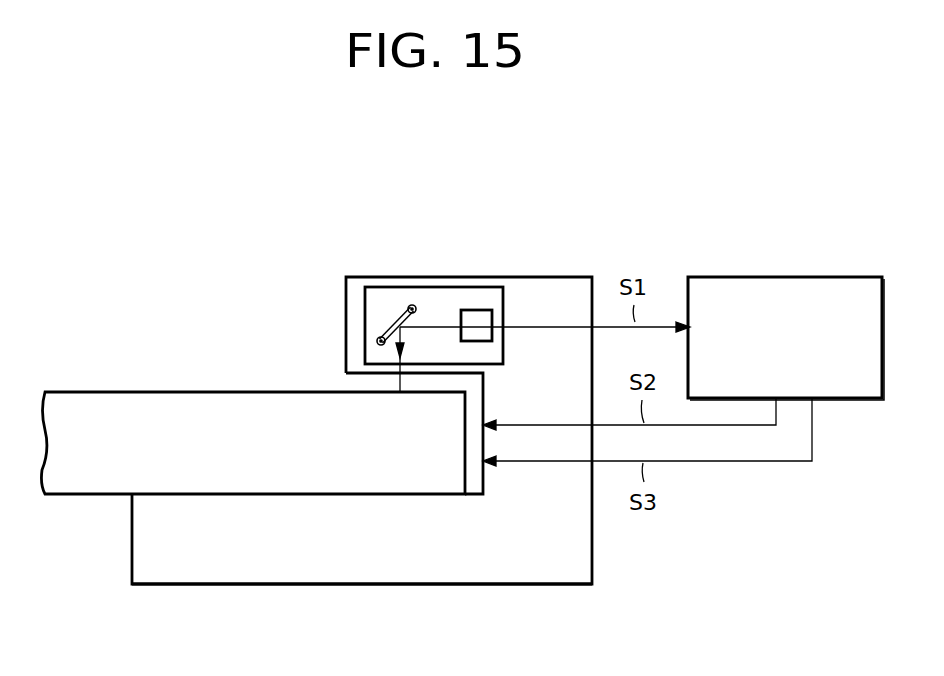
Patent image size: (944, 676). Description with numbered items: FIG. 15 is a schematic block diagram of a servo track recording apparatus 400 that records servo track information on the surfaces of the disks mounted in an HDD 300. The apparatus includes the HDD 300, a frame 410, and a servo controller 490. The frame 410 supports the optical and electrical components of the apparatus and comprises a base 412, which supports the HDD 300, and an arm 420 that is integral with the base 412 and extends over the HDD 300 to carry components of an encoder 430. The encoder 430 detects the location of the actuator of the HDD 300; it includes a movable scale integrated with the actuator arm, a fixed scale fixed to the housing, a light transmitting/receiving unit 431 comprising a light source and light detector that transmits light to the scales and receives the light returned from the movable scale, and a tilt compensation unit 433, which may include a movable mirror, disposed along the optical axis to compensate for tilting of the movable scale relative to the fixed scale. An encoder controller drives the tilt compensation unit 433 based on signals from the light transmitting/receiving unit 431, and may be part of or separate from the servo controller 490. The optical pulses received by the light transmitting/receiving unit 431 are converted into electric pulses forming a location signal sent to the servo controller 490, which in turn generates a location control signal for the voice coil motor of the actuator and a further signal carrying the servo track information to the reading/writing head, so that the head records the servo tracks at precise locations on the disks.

The HDD 300 is at (82, 400).
The servo track recording apparatus 400 is at (613, 230).
The frame 410 is at (586, 556).
The base 412 is at (320, 592).
The arm 420 is at (357, 283).
The encoder 430 is at (422, 275).
The light transmitting/receiving unit 431 is at (481, 310).
The tilt compensation unit 433 is at (380, 337).
The servo controller 490 is at (785, 277).